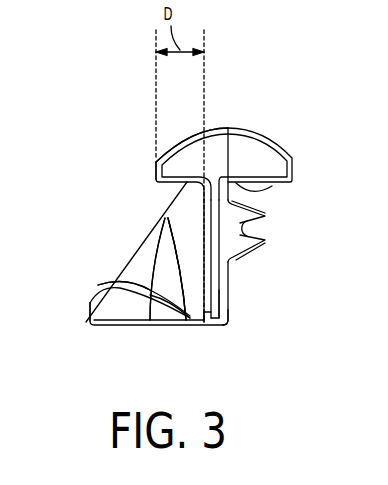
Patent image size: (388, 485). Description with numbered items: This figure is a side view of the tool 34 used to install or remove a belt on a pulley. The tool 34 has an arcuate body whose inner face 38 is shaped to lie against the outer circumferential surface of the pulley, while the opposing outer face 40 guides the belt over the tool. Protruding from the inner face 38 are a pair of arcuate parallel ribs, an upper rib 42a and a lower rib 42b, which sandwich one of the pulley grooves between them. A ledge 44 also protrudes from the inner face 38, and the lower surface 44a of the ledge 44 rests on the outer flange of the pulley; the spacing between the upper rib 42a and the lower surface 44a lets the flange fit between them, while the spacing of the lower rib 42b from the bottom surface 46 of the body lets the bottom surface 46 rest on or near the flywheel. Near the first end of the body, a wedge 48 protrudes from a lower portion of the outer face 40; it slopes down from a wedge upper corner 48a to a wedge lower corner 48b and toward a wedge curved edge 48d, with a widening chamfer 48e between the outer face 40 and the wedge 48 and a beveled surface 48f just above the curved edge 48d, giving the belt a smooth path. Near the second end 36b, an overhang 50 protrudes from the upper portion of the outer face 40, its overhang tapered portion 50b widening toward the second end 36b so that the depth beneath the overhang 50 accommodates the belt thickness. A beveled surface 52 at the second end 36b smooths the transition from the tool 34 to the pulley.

The tool 34 is at (292, 128).
The ledge 44 is at (253, 114).
The lower surface of the ledge 44a is at (272, 190).
The overhang 50 is at (180, 129).
The overhang tapered portion 50b is at (155, 168).
The inner face 38 is at (232, 280).
The second end 36b is at (232, 307).
The upper rib 42a is at (264, 214).
The lower rib 42b is at (264, 238).
The wedge 48 is at (128, 250).
The outer face 40 is at (166, 221).
The wedge upper corner 48a is at (167, 213).
The wedge lower corner 48b is at (163, 293).
The wedge curved edge 48d is at (96, 309).
The widening chamfer 48e is at (177, 282).
The beveled surface 48f is at (112, 287).
The beveled surface 52 is at (211, 323).
The bottom surface 46 is at (224, 326).